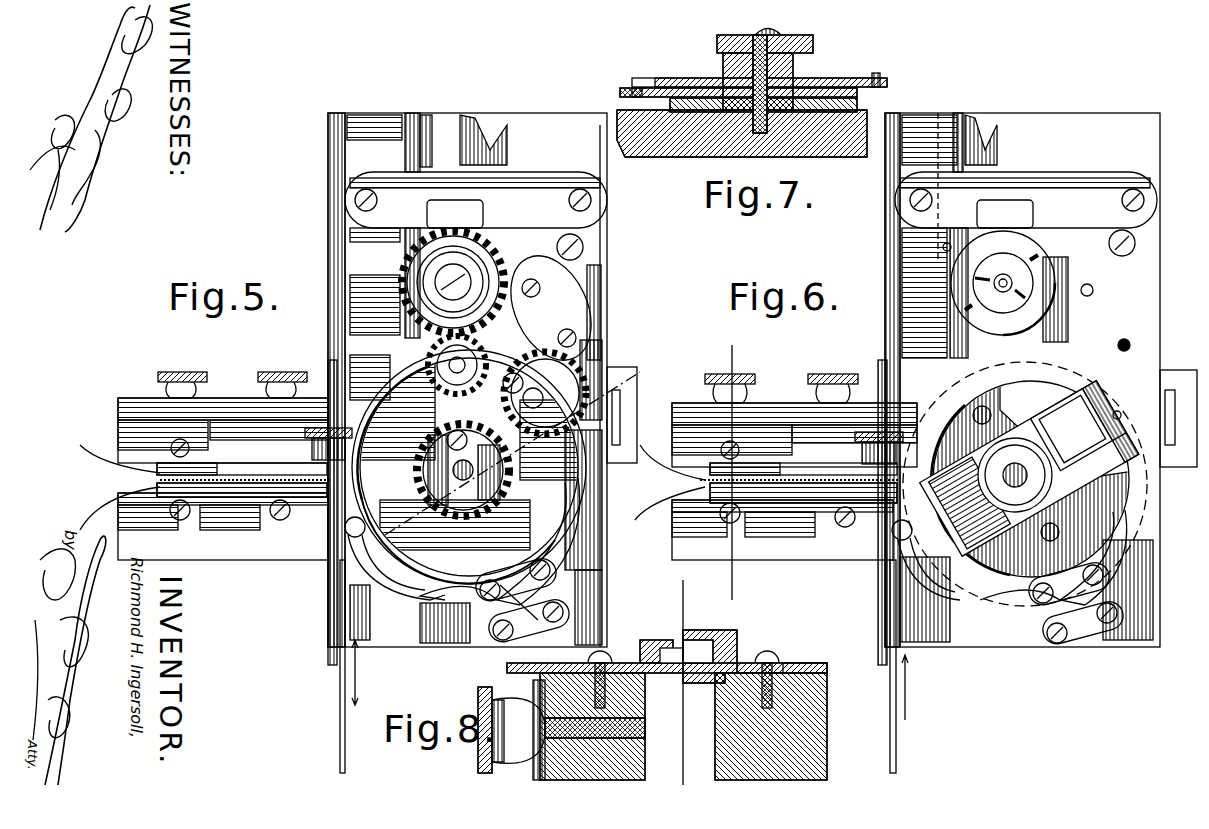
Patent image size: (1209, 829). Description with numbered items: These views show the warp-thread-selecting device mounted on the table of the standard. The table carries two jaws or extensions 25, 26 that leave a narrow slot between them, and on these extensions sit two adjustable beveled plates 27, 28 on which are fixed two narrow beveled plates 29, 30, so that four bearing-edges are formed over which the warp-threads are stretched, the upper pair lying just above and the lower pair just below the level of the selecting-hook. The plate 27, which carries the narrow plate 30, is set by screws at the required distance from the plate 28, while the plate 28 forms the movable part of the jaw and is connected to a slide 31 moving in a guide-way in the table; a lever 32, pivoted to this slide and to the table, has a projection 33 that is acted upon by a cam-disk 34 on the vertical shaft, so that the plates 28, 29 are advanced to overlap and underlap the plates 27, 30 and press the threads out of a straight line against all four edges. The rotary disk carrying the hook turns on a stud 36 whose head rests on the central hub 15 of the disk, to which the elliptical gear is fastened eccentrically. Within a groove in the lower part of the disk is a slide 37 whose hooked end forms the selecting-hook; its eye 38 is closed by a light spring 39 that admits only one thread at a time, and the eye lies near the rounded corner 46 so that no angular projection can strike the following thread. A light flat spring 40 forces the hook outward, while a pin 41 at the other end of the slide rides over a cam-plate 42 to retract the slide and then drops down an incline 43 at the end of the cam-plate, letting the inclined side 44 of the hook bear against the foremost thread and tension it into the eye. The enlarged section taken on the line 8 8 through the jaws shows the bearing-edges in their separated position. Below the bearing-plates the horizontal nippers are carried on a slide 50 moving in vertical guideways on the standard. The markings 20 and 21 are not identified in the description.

In FIG. 6, the section line 8 is at (731, 471).
In FIG. 8, the section line 8 is at (732, 580).
In FIG. 7, the central hub 15 is at (793, 64).
In FIG. 5, the slot line 20 is at (365, 553).
In FIG. 6, the slot line 20 is at (683, 600).
In FIG. 8, the slot line 20 is at (694, 682).
In FIG. 5, the stop 21 is at (300, 608).
In FIG. 8, the jaw 25 is at (740, 752).
In FIG. 8, the jaw 26 is at (630, 748).
In FIG. 5, the adjustable plate 27 is at (223, 430).
In FIG. 6, the adjustable plate 27 is at (794, 438).
In FIG. 8, the adjustable plate 27 is at (622, 665).
In FIG. 5, the adjustable plate 28 is at (223, 526).
In FIG. 6, the adjustable plate 28 is at (782, 530).
In FIG. 8, the adjustable plate 28 is at (792, 662).
In FIG. 5, the narrow plate 29 is at (250, 495).
In FIG. 6, the narrow plate 29 is at (825, 497).
In FIG. 8, the narrow plate 29 is at (722, 637).
In FIG. 5, the narrow plate 30 is at (258, 470).
In FIG. 6, the narrow plate 30 is at (812, 470).
In FIG. 8, the narrow plate 30 is at (648, 645).
In FIG. 5, the slide 31 is at (405, 272).
In FIG. 6, the slide 31 is at (921, 295).
In FIG. 5, the lever 32 is at (476, 200).
In FIG. 6, the lever 32 is at (1026, 200).
In FIG. 5, the projection 33 is at (455, 214).
In FIG. 6, the projection 33 is at (1005, 214).
In FIG. 5, the cam-disk 34 is at (551, 305).
In FIG. 6, the cam-disk 34 is at (1003, 283).
In FIG. 7, the stud 36 is at (723, 70).
In FIG. 6, the slide 37 is at (1062, 443).
In FIG. 7, the slide 37 is at (887, 84).
In FIG. 5, the eye 38 is at (354, 517).
In FIG. 6, the eye 38 is at (902, 530).
In FIG. 7, the eye 38 is at (620, 88).
In FIG. 5, the light spring 39 is at (355, 537).
In FIG. 6, the light spring 39 is at (898, 540).
In FIG. 7, the light spring 39 is at (620, 92).
In FIG. 6, the flat spring 40 is at (980, 570).
In FIG. 6, the pin 41 is at (1121, 411).
In FIG. 7, the pin 41 is at (882, 76).
In FIG. 5, the cam-plate 42 is at (415, 675).
In FIG. 6, the cam-plate 42 is at (1115, 552).
In FIG. 5, the incline 43 is at (575, 508).
In FIG. 6, the incline 43 is at (1140, 515).
In FIG. 5, the inclined side 44 is at (370, 588).
In FIG. 5, the corner 46 is at (350, 527).
In FIG. 6, the corner 46 is at (899, 505).
In FIG. 5, the slide 50 is at (640, 412).
In FIG. 6, the slide 50 is at (1172, 375).